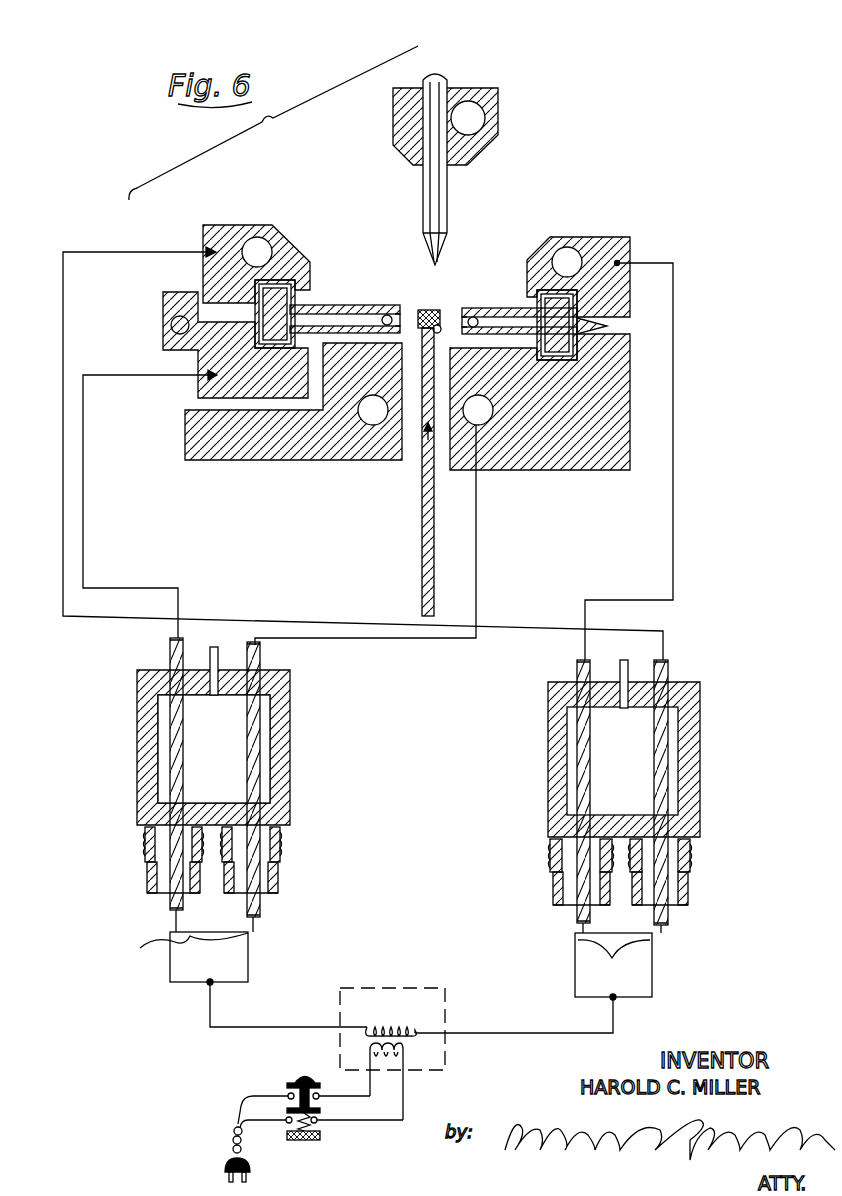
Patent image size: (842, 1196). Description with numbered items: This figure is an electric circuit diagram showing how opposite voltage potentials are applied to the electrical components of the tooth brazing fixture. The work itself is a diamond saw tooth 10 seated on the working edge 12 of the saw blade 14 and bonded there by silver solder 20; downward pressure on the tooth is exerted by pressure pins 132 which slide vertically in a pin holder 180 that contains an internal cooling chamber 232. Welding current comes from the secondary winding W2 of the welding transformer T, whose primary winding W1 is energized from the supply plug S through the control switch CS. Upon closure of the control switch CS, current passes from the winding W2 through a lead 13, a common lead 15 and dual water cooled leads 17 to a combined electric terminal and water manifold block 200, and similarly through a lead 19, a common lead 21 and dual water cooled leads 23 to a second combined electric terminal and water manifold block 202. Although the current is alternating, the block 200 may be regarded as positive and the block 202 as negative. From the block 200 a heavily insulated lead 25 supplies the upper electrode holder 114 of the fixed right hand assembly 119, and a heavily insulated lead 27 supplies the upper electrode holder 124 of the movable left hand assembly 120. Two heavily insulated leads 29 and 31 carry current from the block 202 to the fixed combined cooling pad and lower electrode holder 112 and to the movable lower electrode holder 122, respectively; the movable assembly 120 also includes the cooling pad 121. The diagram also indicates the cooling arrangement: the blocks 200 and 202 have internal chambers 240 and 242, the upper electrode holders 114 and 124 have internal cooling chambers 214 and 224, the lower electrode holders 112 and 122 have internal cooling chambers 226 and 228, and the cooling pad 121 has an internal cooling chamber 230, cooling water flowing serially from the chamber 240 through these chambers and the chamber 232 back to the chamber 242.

The pin holder 180 is at (392, 105).
The internal cooling chamber 232 is at (480, 118).
The pressure pins 132 is at (448, 210).
The upper electrode holder 124 is at (241, 226).
The internal cooling chamber 224 is at (262, 240).
The internal cooling chamber 228 is at (181, 316).
The internal cooling chamber 214 is at (567, 248).
The upper electrode holder 114 is at (591, 238).
The diamond saw tooth 10 is at (439, 312).
The silver solder 20 is at (429, 318).
The working edge 12 is at (440, 332).
The movable assembly 120 is at (255, 344).
The lower electrode holder 122 is at (200, 391).
The cooling pad 121 is at (235, 460).
The internal cooling chamber 230 is at (372, 427).
The internal cooling chamber 226 is at (479, 427).
The combined cooling pad and lower electrode holder 112 is at (547, 470).
The fixed assembly 119 is at (595, 353).
The lead 27 is at (63, 526).
The lead 31 is at (83, 540).
The lead 25 is at (673, 527).
The lead 29 is at (476, 546).
The saw blade 14 is at (421, 549).
The internal chamber 242 is at (156, 790).
The combined electric terminal and water manifold block 202 is at (292, 788).
The internal chamber 240 is at (568, 790).
The combined electric terminal and water manifold block 200 is at (702, 781).
The dual water cooled leads 23 is at (181, 946).
The common lead 21 is at (232, 984).
The lead 19 is at (248, 1027).
The dual water cooled leads 17 is at (618, 960).
The common lead 15 is at (612, 1018).
The lead 13 is at (524, 1034).
The welding transformer T is at (421, 1054).
The primary winding W1 is at (386, 1081).
The secondary winding W2 is at (391, 1019).
The control switch CS is at (292, 1074).
The power plug S is at (249, 1155).